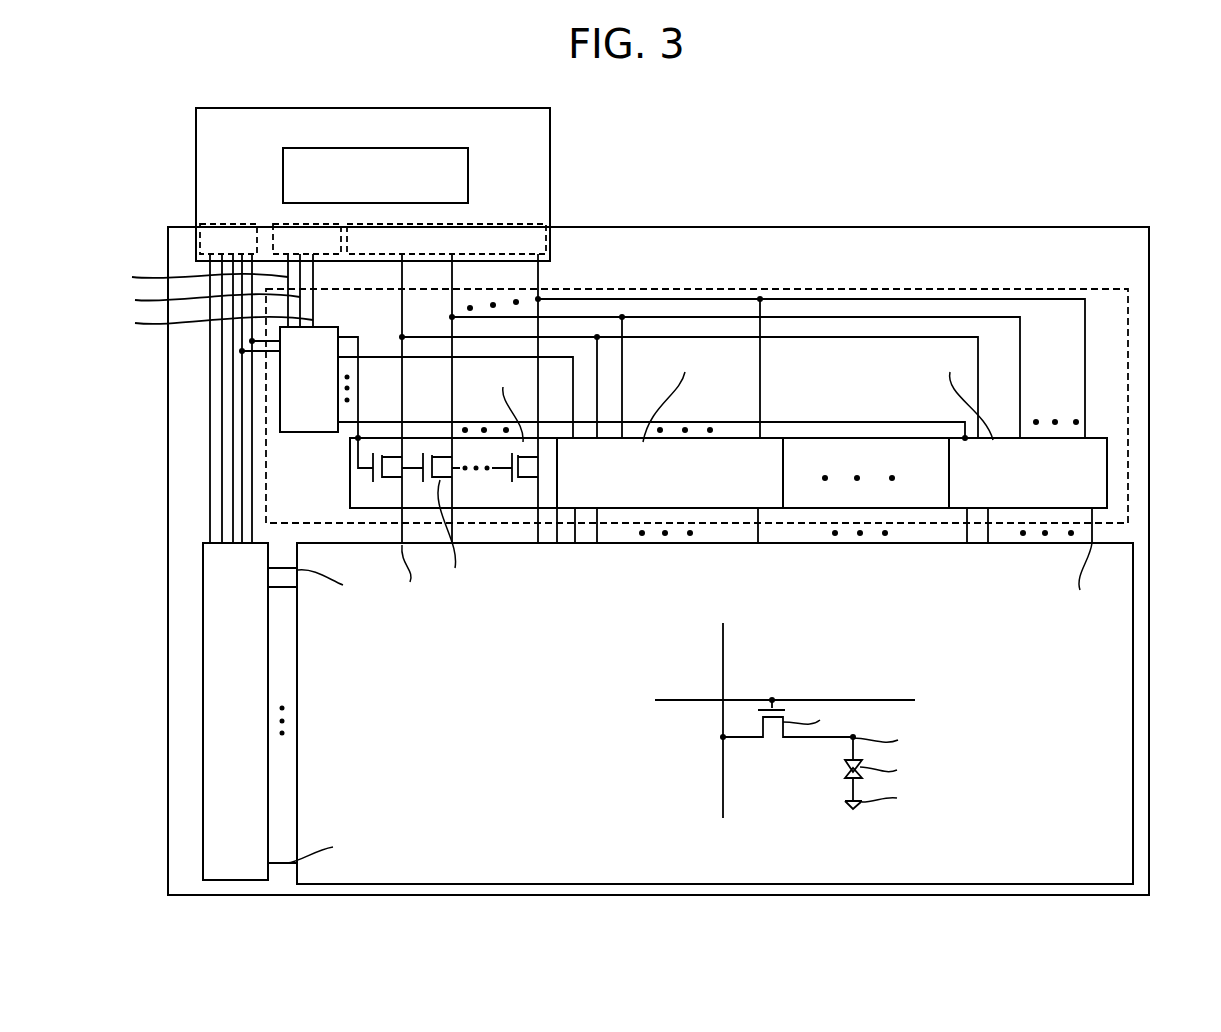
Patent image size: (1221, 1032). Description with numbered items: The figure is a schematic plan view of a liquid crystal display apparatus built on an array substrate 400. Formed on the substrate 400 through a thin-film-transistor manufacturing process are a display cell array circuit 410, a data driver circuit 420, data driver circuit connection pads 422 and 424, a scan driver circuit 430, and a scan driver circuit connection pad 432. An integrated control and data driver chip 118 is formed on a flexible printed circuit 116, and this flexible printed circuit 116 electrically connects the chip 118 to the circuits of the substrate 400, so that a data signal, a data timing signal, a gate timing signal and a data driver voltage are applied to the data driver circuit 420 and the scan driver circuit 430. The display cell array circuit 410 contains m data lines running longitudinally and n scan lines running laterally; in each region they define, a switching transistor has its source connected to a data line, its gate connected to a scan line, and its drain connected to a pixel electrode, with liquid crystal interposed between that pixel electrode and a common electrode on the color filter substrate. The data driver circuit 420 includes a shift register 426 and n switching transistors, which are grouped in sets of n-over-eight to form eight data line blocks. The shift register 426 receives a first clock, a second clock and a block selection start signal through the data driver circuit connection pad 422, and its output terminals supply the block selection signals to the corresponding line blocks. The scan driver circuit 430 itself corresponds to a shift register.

The flexible printed circuit 116 is at (550, 162).
The integrated control and data driver chip 118 is at (468, 160).
The substrate 400 is at (1149, 779).
The display cell array circuit 410 is at (1133, 629).
The data driver circuit 420 is at (1128, 362).
The data driver circuit connection pad 422 is at (280, 228).
The data driver circuit connection pad 424 is at (525, 230).
The shift register 426 is at (310, 432).
The scan driver circuit 430 is at (203, 647).
The scan driver circuit connection pad 432 is at (197, 228).